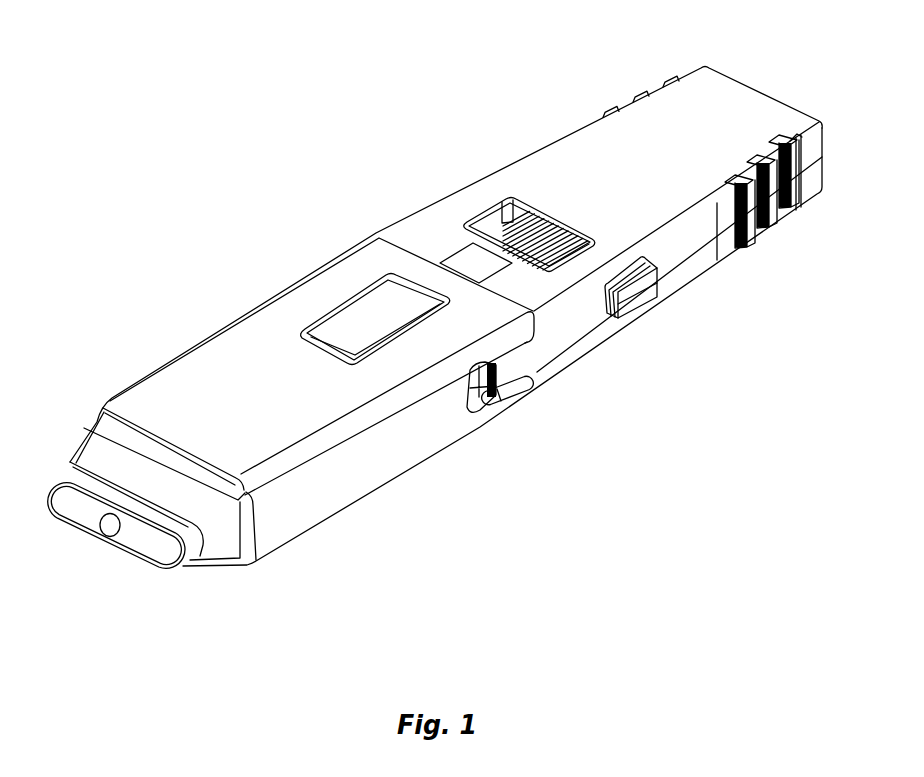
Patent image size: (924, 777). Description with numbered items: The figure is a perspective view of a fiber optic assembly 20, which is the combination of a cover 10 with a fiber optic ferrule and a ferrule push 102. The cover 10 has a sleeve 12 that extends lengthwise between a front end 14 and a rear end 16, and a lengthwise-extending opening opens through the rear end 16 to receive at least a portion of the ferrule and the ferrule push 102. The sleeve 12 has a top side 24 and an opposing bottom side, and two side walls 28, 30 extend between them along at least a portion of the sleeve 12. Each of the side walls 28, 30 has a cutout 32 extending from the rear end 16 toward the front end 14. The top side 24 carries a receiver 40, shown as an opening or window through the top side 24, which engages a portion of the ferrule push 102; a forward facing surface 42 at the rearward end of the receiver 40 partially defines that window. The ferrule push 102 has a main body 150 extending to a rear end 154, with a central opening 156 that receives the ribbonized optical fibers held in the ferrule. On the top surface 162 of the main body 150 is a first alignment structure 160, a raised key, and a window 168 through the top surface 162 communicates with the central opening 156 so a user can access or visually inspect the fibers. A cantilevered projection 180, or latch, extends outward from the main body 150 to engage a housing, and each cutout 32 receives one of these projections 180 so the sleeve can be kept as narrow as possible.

The cover 10 is at (207, 336).
The sleeve 12 is at (388, 467).
The front end 14 is at (143, 551).
The rear end 16 is at (533, 383).
The fiber optic assembly 20 is at (459, 90).
The top side 24 is at (266, 404).
The side wall 28 is at (315, 487).
The side wall 30 is at (116, 403).
The cutout 32 is at (516, 400).
The receiver 40 is at (392, 276).
The forward facing surface 42 is at (420, 280).
The ferrule push 102 is at (696, 289).
The main body 150 is at (733, 88).
The rear end 154 is at (822, 150).
The central opening 156 is at (503, 232).
The first alignment structure 160 is at (340, 327).
The top surface 162 is at (678, 166).
The window 168 is at (568, 217).
The projection 180 is at (472, 405).